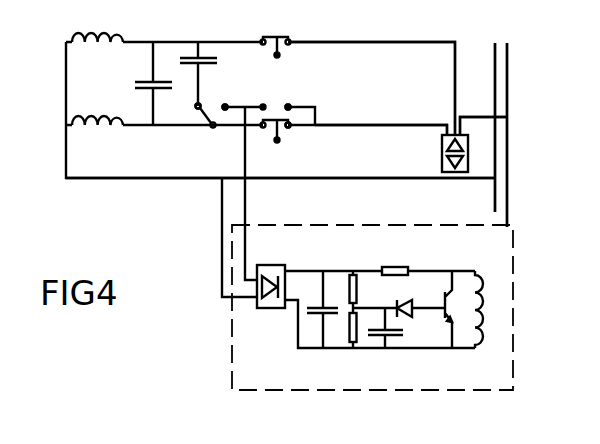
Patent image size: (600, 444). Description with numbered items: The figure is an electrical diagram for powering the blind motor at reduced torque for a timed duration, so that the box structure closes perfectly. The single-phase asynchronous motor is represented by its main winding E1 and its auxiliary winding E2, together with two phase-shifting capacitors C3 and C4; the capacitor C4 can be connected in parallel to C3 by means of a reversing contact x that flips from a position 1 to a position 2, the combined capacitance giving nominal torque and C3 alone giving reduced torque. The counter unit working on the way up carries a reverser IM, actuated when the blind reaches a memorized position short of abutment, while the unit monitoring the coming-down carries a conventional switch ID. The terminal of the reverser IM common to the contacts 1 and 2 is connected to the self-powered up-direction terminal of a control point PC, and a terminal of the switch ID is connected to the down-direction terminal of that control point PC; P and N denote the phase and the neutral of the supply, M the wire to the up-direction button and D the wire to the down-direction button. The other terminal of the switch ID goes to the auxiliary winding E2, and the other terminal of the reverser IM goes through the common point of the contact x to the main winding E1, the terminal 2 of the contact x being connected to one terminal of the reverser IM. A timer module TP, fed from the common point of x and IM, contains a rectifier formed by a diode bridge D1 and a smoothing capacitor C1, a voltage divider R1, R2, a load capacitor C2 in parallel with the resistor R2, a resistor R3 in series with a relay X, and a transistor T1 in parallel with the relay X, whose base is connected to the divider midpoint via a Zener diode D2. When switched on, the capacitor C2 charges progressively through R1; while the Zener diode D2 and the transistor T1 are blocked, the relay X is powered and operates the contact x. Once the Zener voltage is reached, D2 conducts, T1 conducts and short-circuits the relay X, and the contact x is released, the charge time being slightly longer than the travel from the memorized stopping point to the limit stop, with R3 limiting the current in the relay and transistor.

The main winding E1 is at (97, 105).
The auxiliary winding E2 is at (97, 23).
The phase-shifting capacitor C3 is at (144, 71).
The phase-shifting capacitor C4 is at (207, 50).
The reversing contact x is at (207, 130).
The switch ID is at (265, 37).
The reverser IM is at (269, 112).
The contact position 1 is at (241, 115).
The contact position 2 is at (263, 95).
The down-direction wire D is at (371, 75).
The up-direction wire M is at (381, 118).
The neutral N is at (282, 114).
The phase P is at (489, 121).
The control point PC is at (430, 143).
The timer module TP is at (297, 392).
The diode bridge D1 is at (278, 310).
The smoothing capacitor C1 is at (320, 300).
The resistor of voltage divider R1 is at (348, 290).
The resistor of voltage divider R2 is at (350, 333).
The resistor R3 is at (390, 266).
The Zener diode D2 is at (405, 315).
The load capacitor C2 is at (397, 337).
The transistor T1 is at (445, 305).
The relay X is at (488, 309).